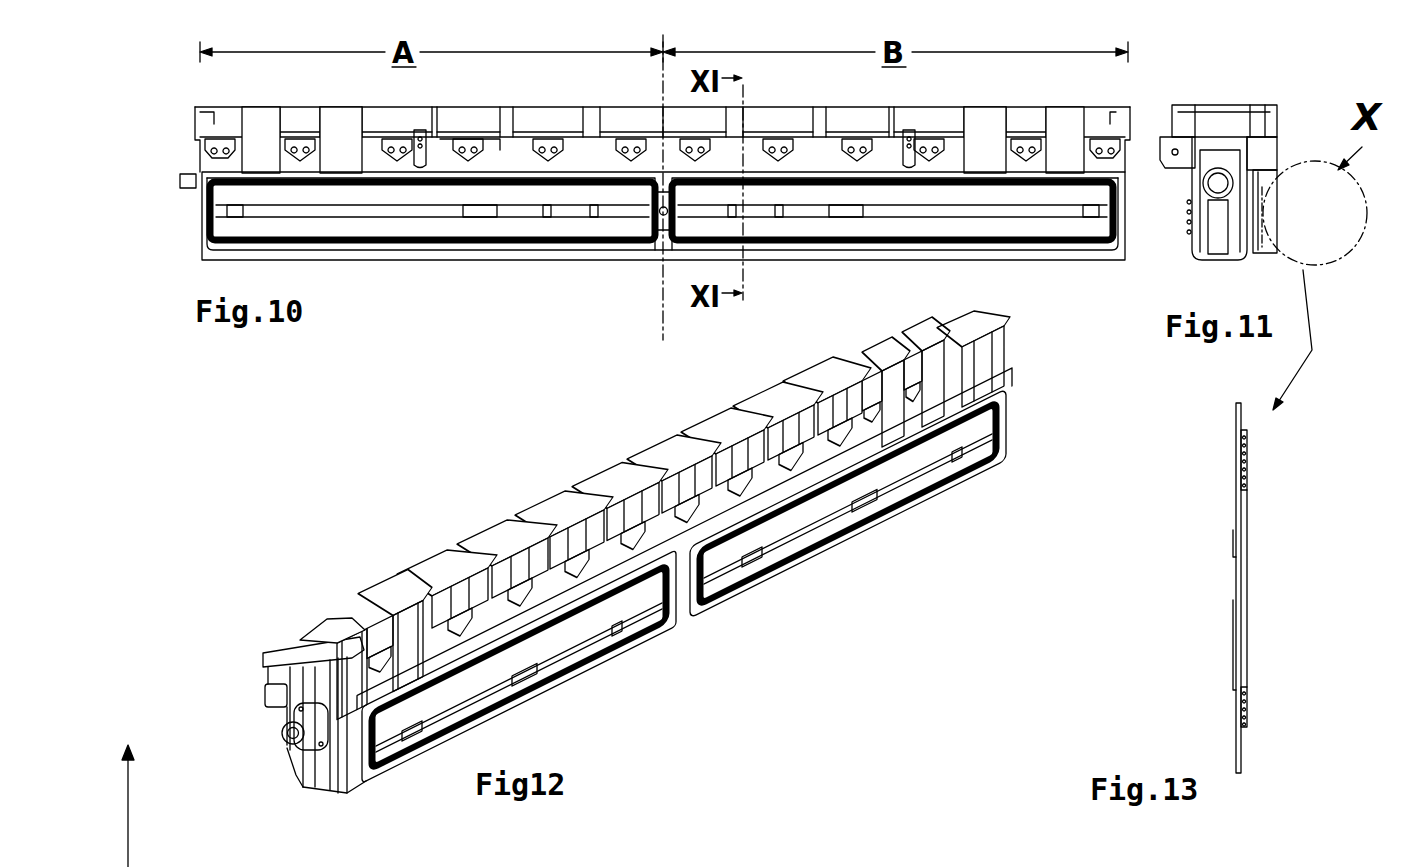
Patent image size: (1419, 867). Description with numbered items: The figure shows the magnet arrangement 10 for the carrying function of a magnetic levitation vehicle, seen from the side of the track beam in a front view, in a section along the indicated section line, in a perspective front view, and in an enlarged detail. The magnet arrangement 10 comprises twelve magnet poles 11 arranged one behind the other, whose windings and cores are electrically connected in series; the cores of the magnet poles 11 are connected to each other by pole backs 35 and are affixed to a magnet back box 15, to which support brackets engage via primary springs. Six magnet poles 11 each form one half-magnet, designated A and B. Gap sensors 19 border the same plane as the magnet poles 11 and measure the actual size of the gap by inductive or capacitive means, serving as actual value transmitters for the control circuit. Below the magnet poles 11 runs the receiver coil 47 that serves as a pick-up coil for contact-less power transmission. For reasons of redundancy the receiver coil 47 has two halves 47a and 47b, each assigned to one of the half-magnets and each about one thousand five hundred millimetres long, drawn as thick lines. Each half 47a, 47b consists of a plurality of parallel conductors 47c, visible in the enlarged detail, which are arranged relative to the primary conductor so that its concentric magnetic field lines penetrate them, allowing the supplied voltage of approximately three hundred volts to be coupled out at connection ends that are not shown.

In FIG. 12, the magnet arrangement 10 is at (364, 298).
In FIG. 10, the magnet poles 11 is at (530, 123).
In FIG. 12, the magnet poles 11 is at (522, 528).
In FIG. 10, the magnet back box 15 is at (646, 254).
In FIG. 11, the magnet back box 15 is at (1200, 232).
In FIG. 10, the gap sensors 19 is at (340, 123).
In FIG. 12, the gap sensors 19 is at (328, 628).
In FIG. 10, the pole backs 35 is at (502, 160).
In FIG. 10, the receiver coil 47 is at (520, 242).
In FIG. 10, the first half of the receiver coil 47a is at (448, 242).
In FIG. 12, the first half of the receiver coil 47a is at (550, 690).
In FIG. 10, the second half of the receiver coil 47b is at (1020, 242).
In FIG. 11, the second half of the receiver coil 47b is at (1285, 215).
In FIG. 13, the second half of the receiver coil 47b is at (1254, 602).
In FIG. 12, the second half of the receiver coil 47b is at (833, 543).
In FIG. 13, the parallel conductors 47c is at (1243, 717).